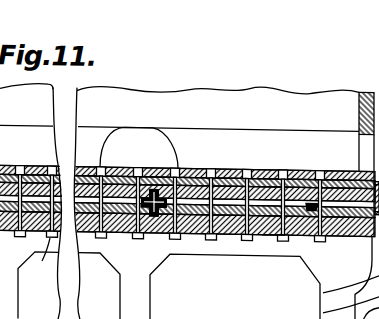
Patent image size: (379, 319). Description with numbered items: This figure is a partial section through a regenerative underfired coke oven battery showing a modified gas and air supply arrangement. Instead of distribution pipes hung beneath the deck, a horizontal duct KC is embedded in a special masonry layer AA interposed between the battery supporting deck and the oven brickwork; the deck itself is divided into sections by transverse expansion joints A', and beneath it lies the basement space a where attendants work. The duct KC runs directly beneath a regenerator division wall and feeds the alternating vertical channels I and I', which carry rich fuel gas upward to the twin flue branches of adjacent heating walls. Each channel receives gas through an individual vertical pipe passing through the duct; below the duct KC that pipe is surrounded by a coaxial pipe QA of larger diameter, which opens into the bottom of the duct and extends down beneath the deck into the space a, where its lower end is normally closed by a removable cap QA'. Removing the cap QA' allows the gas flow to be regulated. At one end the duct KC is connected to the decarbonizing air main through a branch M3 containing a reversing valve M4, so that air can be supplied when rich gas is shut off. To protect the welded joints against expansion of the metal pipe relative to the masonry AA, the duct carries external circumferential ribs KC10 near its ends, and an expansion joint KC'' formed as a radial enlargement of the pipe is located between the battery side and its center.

The duct KC is at (13, 215).
The expansion joint KC'' is at (146, 234).
The circumferential rib KC10 is at (309, 200).
The removable cap QA' is at (106, 231).
The coaxial pipe QA is at (185, 228).
The channel I is at (174, 188).
The channel I' is at (139, 133).
The masonry layer AA is at (257, 232).
The expansion joint A' is at (266, 266).
The branch M3 is at (323, 290).
The reversing valve M4 is at (323, 309).
The basement space a is at (184, 317).